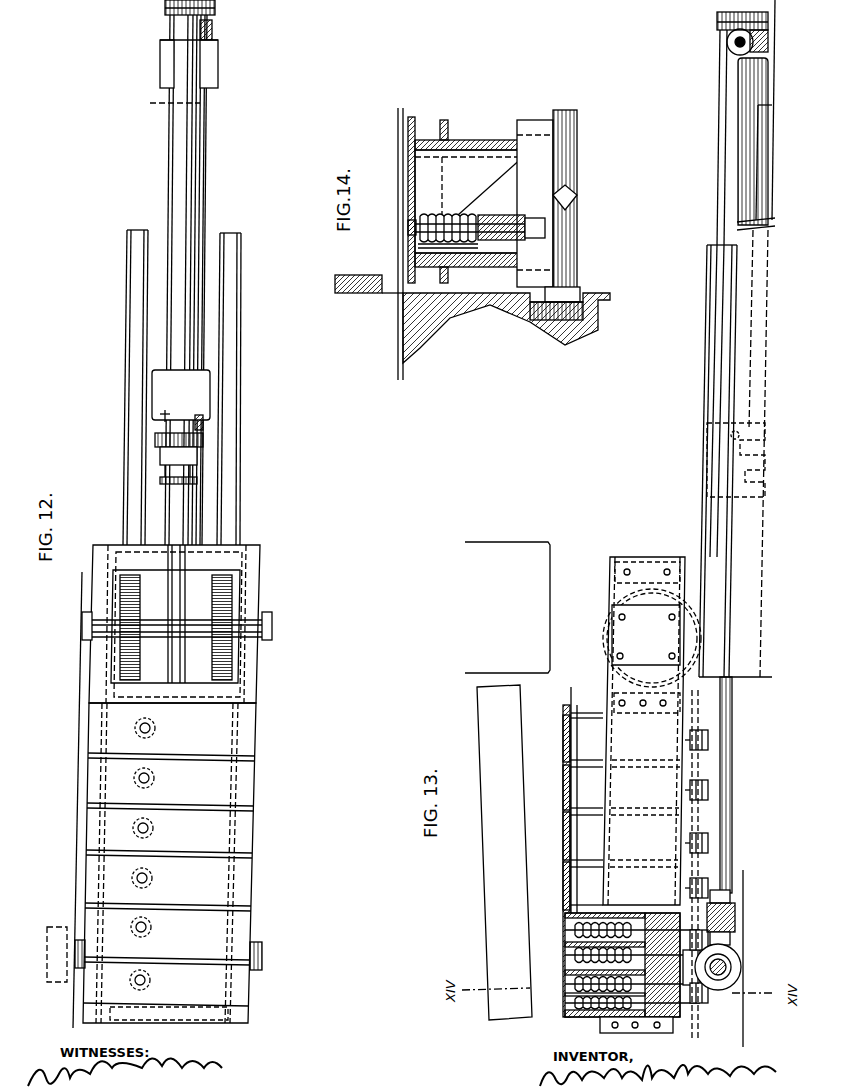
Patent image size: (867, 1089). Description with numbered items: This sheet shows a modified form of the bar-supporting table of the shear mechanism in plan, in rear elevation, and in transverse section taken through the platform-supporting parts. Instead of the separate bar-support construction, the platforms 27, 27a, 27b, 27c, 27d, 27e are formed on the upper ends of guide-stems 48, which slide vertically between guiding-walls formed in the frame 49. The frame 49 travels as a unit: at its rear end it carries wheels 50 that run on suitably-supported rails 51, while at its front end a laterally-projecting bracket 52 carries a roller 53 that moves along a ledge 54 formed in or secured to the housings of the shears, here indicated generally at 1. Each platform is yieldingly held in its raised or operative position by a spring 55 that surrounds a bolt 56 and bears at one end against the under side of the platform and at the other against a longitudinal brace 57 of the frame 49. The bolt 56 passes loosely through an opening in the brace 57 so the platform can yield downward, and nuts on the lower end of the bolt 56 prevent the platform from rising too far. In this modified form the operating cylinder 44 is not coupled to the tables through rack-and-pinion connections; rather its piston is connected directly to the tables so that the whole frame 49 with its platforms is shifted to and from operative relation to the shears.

In FIG. 13, the frame 1 is at (507, 607).
In FIG. 13, the platform 27 is at (566, 712).
In FIG. 13, the platform 27a is at (566, 762).
In FIG. 13, the platform 27b is at (566, 810).
In FIG. 13, the platform 27c is at (566, 858).
In FIG. 13, the platform 27d is at (566, 908).
In FIG. 14, the platform 27e is at (398, 210).
In FIG. 12, the fluid-pressure cylinder 44 is at (171, 195).
In FIG. 13, the fluid-pressure cylinder 44 is at (720, 168).
In FIG. 12, the guide-stem 48 is at (169, 863).
In FIG. 14, the guide-stem 48 is at (422, 142).
In FIG. 13, the guide-stem 48 is at (586, 800).
In FIG. 12, the frame 49 is at (96, 682).
In FIG. 14, the frame 49 is at (483, 140).
In FIG. 13, the frame 49 is at (644, 731).
In FIG. 12, the wheel 50 is at (140, 593).
In FIG. 13, the wheel 50 is at (690, 655).
In FIG. 12, the rail 51 is at (126, 460).
In FIG. 13, the rail 51 is at (703, 493).
In FIG. 12, the bracket 52 is at (80, 946).
In FIG. 14, the bracket 52 is at (566, 292).
In FIG. 12, the roller 53 is at (52, 935).
In FIG. 14, the roller 53 is at (565, 320).
In FIG. 13, the roller 53 is at (736, 956).
In FIG. 14, the ledge 54 is at (586, 303).
In FIG. 13, the ledge 54 is at (744, 1018).
In FIG. 14, the spring 55 is at (433, 222).
In FIG. 13, the spring 55 is at (596, 1002).
In FIG. 14, the bolt 56 is at (454, 244).
In FIG. 13, the bolt 56 is at (650, 1027).
In FIG. 14, the longitudinal brace 57 is at (503, 200).
In FIG. 13, the longitudinal brace 57 is at (684, 1004).